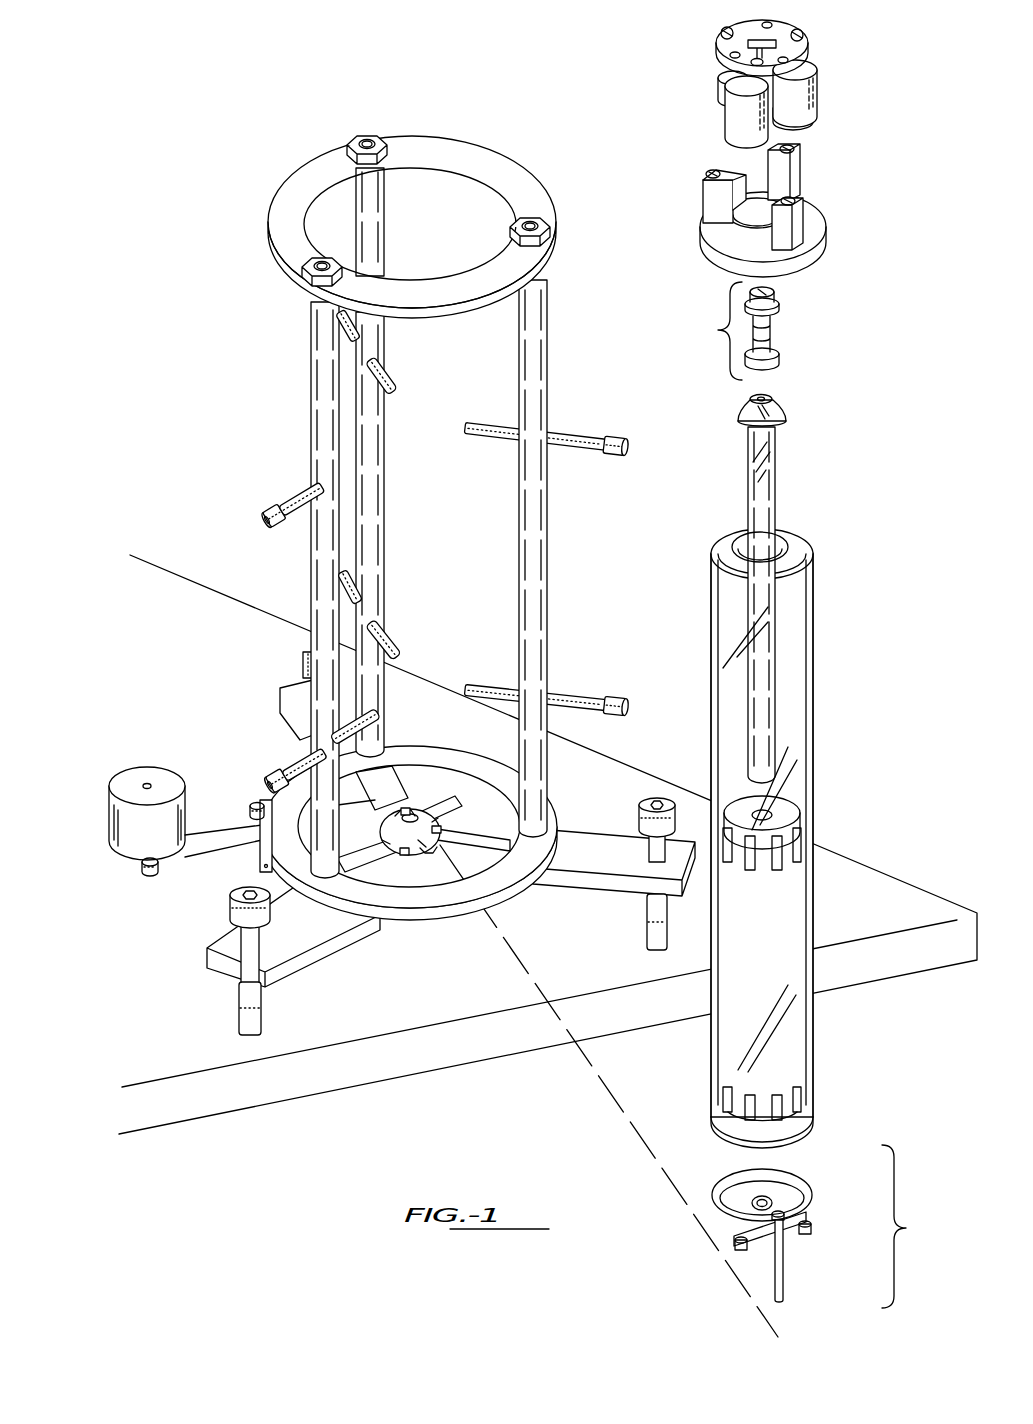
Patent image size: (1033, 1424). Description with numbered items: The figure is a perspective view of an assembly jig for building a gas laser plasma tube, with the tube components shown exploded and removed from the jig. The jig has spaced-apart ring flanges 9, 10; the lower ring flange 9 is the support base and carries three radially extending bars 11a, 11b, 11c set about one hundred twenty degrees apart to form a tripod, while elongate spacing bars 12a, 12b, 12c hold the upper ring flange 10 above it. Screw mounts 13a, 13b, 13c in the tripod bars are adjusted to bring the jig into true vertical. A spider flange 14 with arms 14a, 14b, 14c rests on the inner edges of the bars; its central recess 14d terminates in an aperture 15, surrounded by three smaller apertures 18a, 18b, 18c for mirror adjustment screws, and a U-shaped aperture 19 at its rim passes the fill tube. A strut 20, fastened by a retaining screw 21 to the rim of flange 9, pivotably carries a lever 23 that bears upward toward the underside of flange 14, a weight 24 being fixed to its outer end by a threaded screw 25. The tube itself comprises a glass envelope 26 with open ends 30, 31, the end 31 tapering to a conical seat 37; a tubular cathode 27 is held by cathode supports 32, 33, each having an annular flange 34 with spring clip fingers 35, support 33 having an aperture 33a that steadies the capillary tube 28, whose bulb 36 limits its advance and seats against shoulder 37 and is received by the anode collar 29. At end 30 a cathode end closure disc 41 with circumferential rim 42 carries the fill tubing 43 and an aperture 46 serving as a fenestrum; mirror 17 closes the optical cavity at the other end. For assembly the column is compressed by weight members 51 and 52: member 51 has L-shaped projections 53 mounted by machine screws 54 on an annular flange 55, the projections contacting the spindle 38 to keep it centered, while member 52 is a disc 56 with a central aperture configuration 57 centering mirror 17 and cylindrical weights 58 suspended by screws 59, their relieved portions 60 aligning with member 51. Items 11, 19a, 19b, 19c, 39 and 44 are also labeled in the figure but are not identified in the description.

The ring flange 9 is at (463, 748).
The ring flange 10 is at (455, 138).
The nuts 11 is at (548, 212).
The radially extending bar 11a is at (283, 695).
The radially extending bar 11b is at (207, 958).
The radially extending bar 11c is at (595, 877).
The elongate spacing bar 12a is at (352, 203).
The elongate spacing bar 12b is at (310, 358).
The elongate spacing bar 12c is at (548, 328).
The screw mount 13a is at (305, 660).
The screw mount 13b is at (262, 1018).
The screw mount 13c is at (645, 938).
The spider flange 14 is at (457, 852).
The arm 14a is at (368, 795).
The arm 14b is at (355, 869).
The arm 14c is at (468, 845).
The recess 14d is at (440, 815).
The aperture 15 is at (425, 810).
The mirror 17 is at (778, 295).
The aperture 18a is at (410, 815).
The aperture 18b is at (405, 855).
The aperture 18c is at (441, 830).
The U-shaped aperture 19 is at (428, 852).
The set screw 19a is at (393, 380).
The set screw 19b is at (290, 505).
The set screw 19c is at (590, 428).
The strut 20 is at (266, 781).
The retaining screw 21 is at (250, 808).
The lever 23 is at (185, 860).
The weight 24 is at (140, 767).
The threaded screw 25 is at (150, 875).
The glass envelope 26 is at (710, 678).
The cathode 27 is at (805, 985).
The capillary tube 28 is at (768, 630).
The anode 29 is at (782, 365).
The open end 30 is at (740, 1147).
The open end 31 is at (790, 540).
The cathode support 32 is at (800, 1115).
The cathode support 33 is at (800, 810).
The aperture 33a is at (800, 818).
The annular flange 34 is at (780, 810).
The spring clip fingers 35 is at (815, 852).
The bulb 36 is at (738, 405).
The seat 37 is at (742, 548).
The spindle 38 is at (772, 330).
The valve cap 39 is at (782, 315).
The disc 41 is at (812, 1200).
The circumferential rim 42 is at (805, 1226).
The metal tubing 43 is at (783, 1270).
The washer 44 is at (800, 1208).
The aperture 46 is at (772, 1200).
The weight member 51 is at (845, 208).
The weight member 52 is at (840, 72).
The projection 53 is at (805, 175).
The machine screw 54 is at (710, 172).
The annular flange 55 is at (830, 238).
The disc 56 is at (813, 40).
The central aperture configuration 57 is at (776, 48).
The cylindrical weight 58 is at (735, 112).
The screw 59 is at (722, 30).
The relieved portion 60 is at (730, 80).